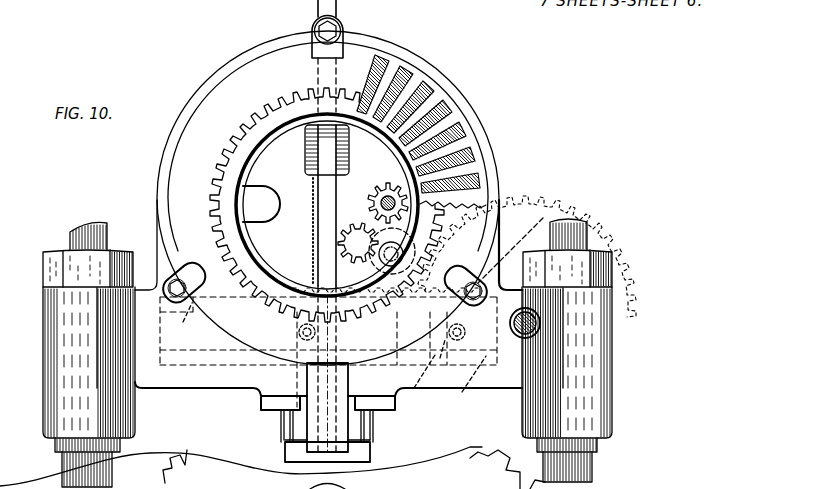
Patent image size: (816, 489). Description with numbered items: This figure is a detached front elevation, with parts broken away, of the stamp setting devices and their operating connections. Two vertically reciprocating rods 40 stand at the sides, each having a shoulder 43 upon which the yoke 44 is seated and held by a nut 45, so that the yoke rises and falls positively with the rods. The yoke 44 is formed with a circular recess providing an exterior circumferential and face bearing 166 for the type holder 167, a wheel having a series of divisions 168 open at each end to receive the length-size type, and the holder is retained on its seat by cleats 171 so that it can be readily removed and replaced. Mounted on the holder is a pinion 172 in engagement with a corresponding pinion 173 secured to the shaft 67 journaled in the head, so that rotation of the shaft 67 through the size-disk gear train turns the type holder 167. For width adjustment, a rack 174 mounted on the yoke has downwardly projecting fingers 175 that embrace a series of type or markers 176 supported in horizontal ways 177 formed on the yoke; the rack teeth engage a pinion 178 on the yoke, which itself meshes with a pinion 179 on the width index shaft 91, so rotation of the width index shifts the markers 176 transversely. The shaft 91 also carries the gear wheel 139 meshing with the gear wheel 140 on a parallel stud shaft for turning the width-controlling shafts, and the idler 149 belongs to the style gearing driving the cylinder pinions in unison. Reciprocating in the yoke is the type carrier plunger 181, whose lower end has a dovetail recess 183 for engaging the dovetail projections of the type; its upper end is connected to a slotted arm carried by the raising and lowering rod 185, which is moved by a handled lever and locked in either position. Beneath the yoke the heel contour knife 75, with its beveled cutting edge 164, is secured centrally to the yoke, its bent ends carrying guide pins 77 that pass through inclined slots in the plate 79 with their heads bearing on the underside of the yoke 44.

The rods 40 is at (63, 468).
The shoulders 43 is at (121, 450).
The yoke 44 is at (100, 352).
The nuts 45 is at (45, 265).
The shaft 67 is at (540, 323).
The heel contour knife 75 is at (358, 448).
The guide pins 77 is at (281, 428).
The plate 79 is at (268, 403).
The width index shaft 91 is at (374, 198).
The gear wheel 139 is at (344, 150).
The gear wheel 140 is at (267, 193).
The idler 149 is at (172, 478).
The beveled cutting edge 164 is at (288, 447).
The bearing 166 is at (166, 162).
The type holder 167 is at (186, 197).
The divisions 168 is at (413, 77).
The cleats 171 is at (338, 43).
The pinion 172 is at (262, 102).
The pinion 173 is at (566, 208).
The rack 174 is at (510, 250).
The fingers 175 is at (297, 332).
The type or markers 176 is at (427, 374).
The horizontal ways 177 is at (319, 356).
The pinion 178 is at (380, 243).
The pinion 179 is at (374, 222).
The plunger 181 is at (328, 256).
The dovetail recesses 183 is at (303, 150).
The raising and lowering rod 185 is at (318, 10).